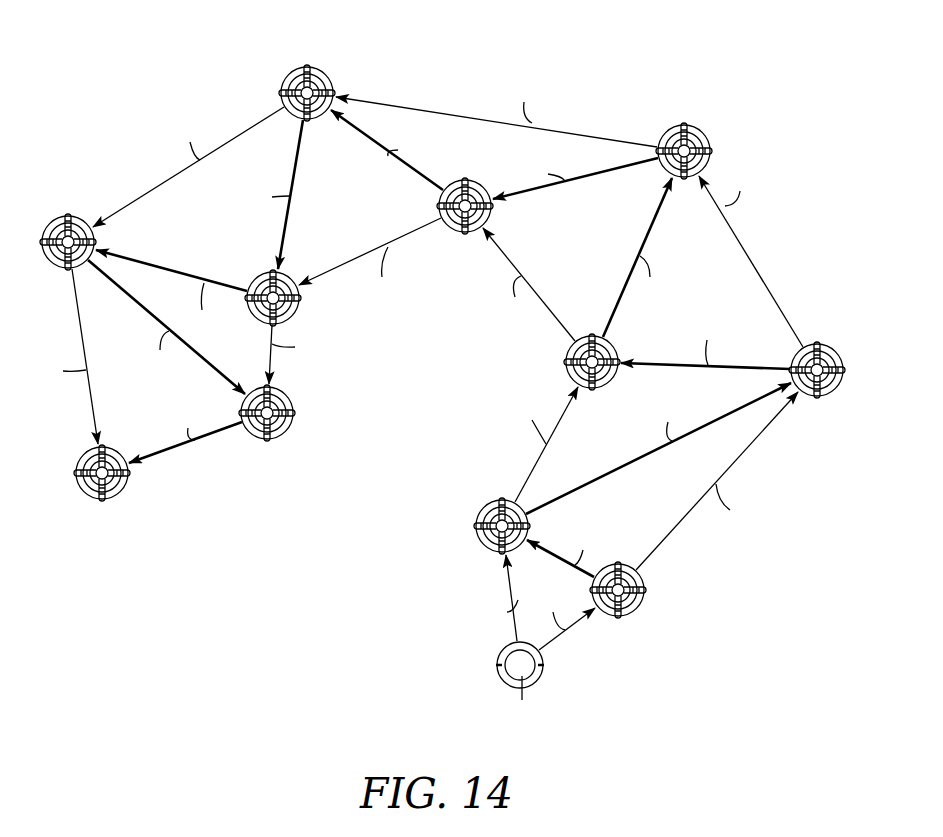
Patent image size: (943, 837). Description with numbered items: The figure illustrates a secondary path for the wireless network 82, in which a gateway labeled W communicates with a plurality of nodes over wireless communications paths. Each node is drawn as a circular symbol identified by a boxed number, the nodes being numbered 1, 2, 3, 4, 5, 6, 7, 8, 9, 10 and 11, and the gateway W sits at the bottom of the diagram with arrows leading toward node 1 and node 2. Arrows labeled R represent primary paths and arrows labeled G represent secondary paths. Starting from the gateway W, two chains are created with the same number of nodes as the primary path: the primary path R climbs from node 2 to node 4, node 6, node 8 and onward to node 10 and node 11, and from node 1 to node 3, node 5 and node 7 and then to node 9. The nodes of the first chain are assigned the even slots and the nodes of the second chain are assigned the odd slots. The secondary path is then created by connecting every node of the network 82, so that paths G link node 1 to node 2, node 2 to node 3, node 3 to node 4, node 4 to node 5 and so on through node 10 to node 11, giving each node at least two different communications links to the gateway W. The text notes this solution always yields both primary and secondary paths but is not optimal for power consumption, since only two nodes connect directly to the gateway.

The network 82 is at (434, 368).
The node 1 is at (637, 601).
The node 2 is at (492, 511).
The node 3 is at (818, 389).
The node 4 is at (572, 360).
The node 5 is at (720, 175).
The node 6 is at (418, 210).
The node 7 is at (320, 82).
The node 8 is at (258, 288).
The node 9 is at (58, 255).
The node 10 is at (286, 408).
The node 11 is at (113, 487).